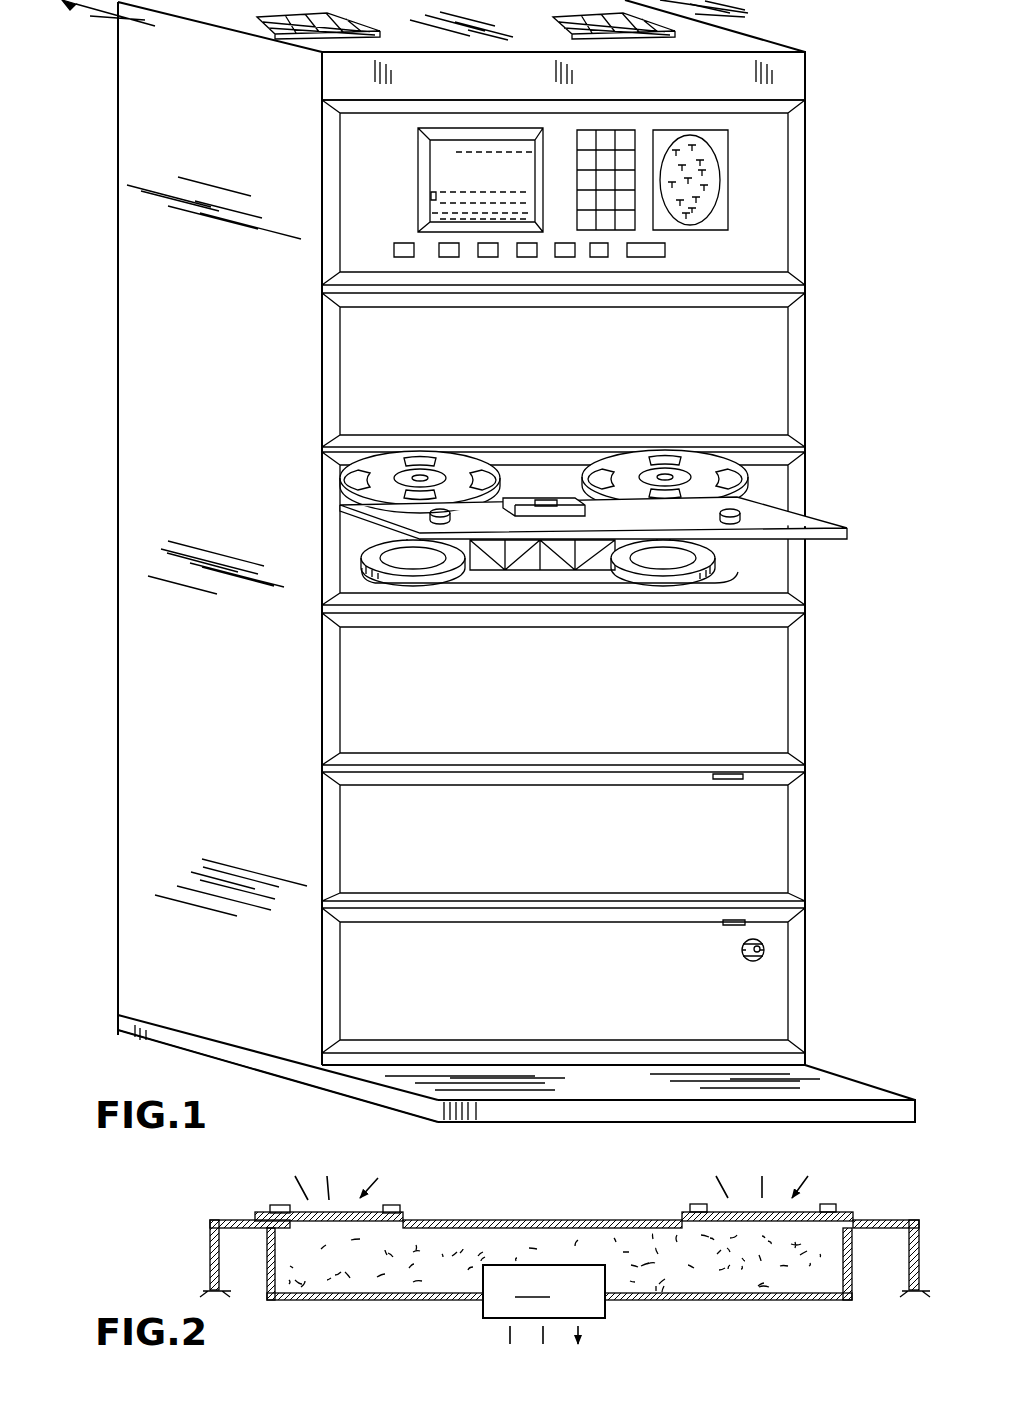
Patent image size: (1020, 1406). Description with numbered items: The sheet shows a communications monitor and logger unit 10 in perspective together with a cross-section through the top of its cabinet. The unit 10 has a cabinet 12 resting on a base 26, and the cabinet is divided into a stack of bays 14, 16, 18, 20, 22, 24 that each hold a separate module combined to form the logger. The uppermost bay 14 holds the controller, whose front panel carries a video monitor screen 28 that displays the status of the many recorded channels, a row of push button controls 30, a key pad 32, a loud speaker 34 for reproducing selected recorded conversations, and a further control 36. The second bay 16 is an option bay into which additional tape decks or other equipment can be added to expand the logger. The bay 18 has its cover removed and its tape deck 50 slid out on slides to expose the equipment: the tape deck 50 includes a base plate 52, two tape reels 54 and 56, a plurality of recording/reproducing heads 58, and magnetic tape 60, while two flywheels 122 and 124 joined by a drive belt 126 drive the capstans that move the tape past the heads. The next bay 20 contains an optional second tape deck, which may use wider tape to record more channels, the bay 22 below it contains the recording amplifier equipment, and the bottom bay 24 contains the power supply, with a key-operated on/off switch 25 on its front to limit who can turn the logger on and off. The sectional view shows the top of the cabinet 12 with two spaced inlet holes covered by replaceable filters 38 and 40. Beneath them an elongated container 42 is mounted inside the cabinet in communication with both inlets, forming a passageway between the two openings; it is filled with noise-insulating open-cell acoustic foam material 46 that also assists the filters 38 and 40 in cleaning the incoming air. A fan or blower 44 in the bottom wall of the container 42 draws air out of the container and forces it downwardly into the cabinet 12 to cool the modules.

In FIG. 1, the communications monitor and logger unit 10 is at (828, 52).
In FIG. 1, the cabinet 12 is at (806, 130).
In FIG. 2, the cabinet 12 is at (210, 1245).
In FIG. 1, the uppermost bay 14 is at (616, 203).
In FIG. 1, the option bay 16 is at (838, 360).
In FIG. 1, the tape deck bay 18 is at (580, 514).
In FIG. 1, the second tape deck bay 20 is at (832, 697).
In FIG. 1, the recording amplifier bay 22 is at (832, 846).
In FIG. 1, the bottom bay 24 is at (618, 980).
In FIG. 1, the key-operated on/off switch 25 is at (758, 963).
In FIG. 1, the base 26 is at (884, 1112).
In FIG. 1, the video monitor screen 28 is at (418, 182).
In FIG. 1, the push button controls 30 is at (399, 238).
In FIG. 1, the key pad 32 is at (619, 126).
In FIG. 1, the loud speaker 34 is at (690, 135).
In FIG. 1, the control 36 is at (650, 262).
In FIG. 1, the replaceable filter 38 is at (290, 32).
In FIG. 2, the replaceable filter 38 is at (334, 1212).
In FIG. 1, the replaceable filter 40 is at (575, 22).
In FIG. 2, the replaceable filter 40 is at (778, 1212).
In FIG. 2, the elongated container 42 is at (345, 1300).
In FIG. 2, the fan or blower 44 is at (544, 1304).
In FIG. 2, the noise-insulating material 46 is at (432, 1272).
In FIG. 1, the tape deck 50 is at (563, 468).
In FIG. 1, the base plate 52 is at (822, 535).
In FIG. 1, the tape reel 54 is at (385, 492).
In FIG. 1, the tape reel 56 is at (700, 460).
In FIG. 1, the recording/reproducing heads 58 is at (547, 495).
In FIG. 1, the magnetic tape 60 is at (458, 465).
In FIG. 1, the flywheel 122 is at (360, 558).
In FIG. 1, the flywheel 124 is at (660, 583).
In FIG. 1, the drive belt 126 is at (540, 590).